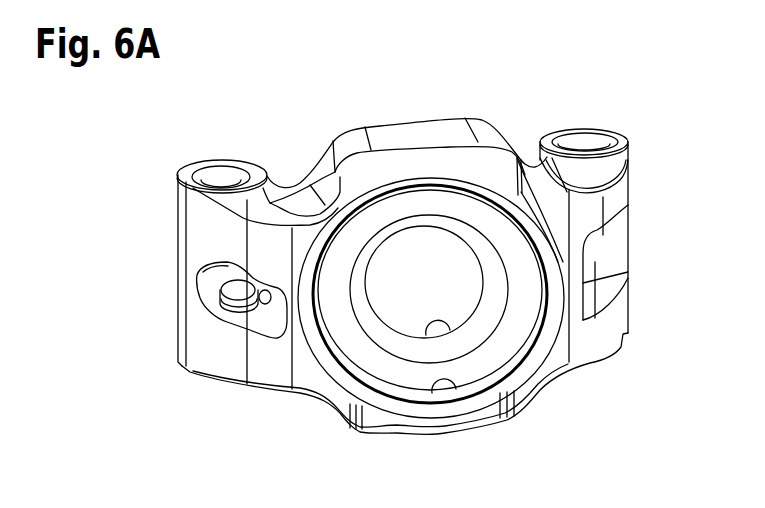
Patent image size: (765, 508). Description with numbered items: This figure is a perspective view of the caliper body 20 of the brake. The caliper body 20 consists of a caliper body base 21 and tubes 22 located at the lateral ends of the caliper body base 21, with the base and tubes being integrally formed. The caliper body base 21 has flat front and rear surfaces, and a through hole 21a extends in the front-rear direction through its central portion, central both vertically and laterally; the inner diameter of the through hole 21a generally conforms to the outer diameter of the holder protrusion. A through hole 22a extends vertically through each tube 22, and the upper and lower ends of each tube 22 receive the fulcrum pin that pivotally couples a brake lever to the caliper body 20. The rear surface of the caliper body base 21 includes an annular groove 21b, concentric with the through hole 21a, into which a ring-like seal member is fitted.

The caliper body 20 is at (569, 86).
The caliper body base 21 is at (408, 112).
The through hole 21a is at (515, 400).
The annular groove 21b is at (452, 322).
The tube 22 is at (182, 232).
The through hole 22a is at (240, 164).